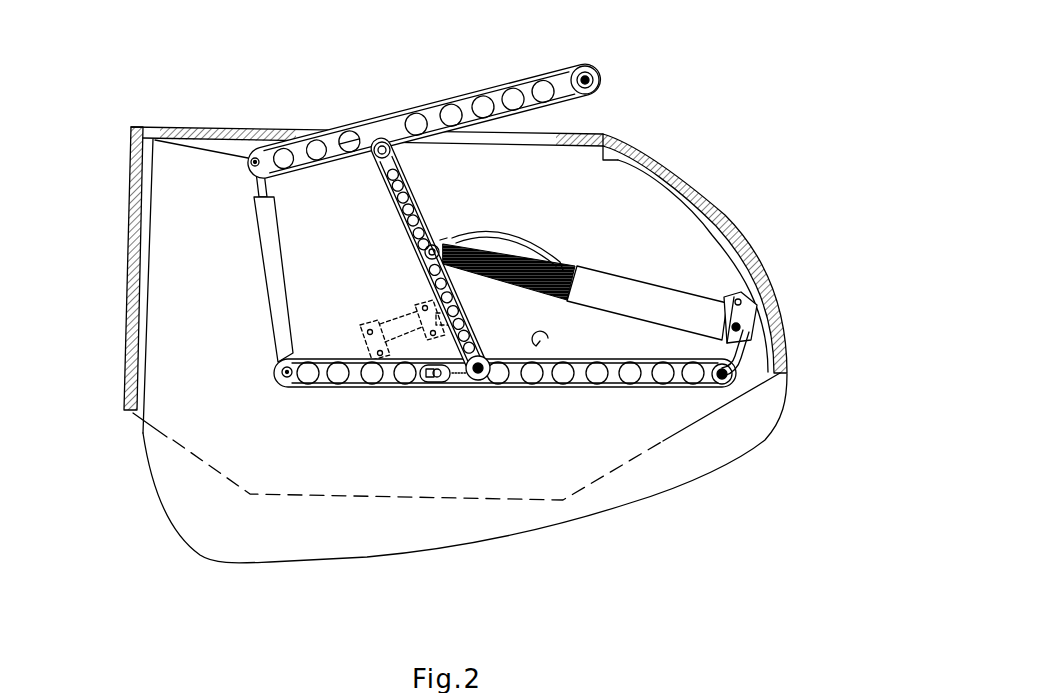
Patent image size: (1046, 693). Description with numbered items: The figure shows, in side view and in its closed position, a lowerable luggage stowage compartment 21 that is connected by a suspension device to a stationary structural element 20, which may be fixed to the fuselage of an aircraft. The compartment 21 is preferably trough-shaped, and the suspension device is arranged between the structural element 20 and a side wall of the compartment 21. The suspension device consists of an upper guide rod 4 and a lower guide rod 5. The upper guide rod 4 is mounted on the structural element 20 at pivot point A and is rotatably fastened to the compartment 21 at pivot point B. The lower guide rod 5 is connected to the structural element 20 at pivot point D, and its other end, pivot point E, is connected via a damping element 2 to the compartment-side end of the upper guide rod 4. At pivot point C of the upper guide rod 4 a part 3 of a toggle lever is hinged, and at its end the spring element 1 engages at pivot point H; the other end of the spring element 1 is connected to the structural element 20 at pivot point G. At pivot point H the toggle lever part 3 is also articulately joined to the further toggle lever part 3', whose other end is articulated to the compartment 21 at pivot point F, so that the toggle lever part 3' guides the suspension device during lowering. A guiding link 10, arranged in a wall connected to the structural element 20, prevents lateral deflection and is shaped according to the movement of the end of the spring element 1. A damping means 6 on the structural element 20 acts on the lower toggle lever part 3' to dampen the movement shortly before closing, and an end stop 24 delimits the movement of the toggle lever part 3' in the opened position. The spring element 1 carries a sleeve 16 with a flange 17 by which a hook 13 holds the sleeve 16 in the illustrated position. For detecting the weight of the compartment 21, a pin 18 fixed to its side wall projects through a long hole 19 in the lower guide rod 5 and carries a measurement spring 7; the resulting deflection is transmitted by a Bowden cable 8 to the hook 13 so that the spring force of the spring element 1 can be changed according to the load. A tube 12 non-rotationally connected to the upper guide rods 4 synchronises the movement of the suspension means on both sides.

The spring element 1 is at (684, 275).
The damping element 2 is at (283, 347).
The toggle lever part 3 is at (269, 259).
The further toggle lever part 3' is at (261, 294).
The upper guide rod 4 is at (395, 128).
The lower guide rod 5 is at (648, 387).
The damping means 6 is at (365, 344).
The measurement spring 7 is at (458, 382).
The Bowden cable 8 is at (505, 495).
The guiding link 10 is at (540, 250).
The tube 12 is at (598, 88).
The hook 13 is at (742, 301).
The sleeve 16 is at (678, 308).
The flange 17 is at (752, 350).
The pin 18 is at (433, 383).
The long hole 19 is at (427, 385).
The structural element 20 is at (200, 127).
The luggage stowage compartment 21 is at (290, 532).
The end stop 24 is at (538, 343).
The pivot point A is at (600, 78).
The pivot point B is at (252, 160).
The pivot point C is at (378, 143).
The pivot point D is at (756, 390).
The pivot point E is at (282, 372).
The pivot point F is at (476, 493).
The pivot point G is at (752, 322).
The pivot point H is at (455, 142).